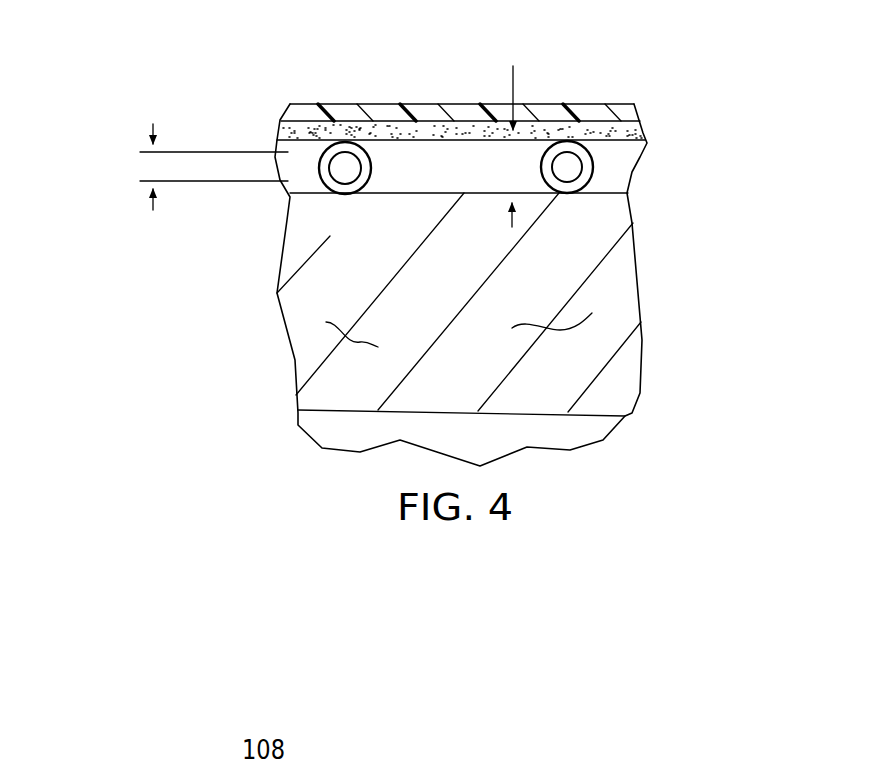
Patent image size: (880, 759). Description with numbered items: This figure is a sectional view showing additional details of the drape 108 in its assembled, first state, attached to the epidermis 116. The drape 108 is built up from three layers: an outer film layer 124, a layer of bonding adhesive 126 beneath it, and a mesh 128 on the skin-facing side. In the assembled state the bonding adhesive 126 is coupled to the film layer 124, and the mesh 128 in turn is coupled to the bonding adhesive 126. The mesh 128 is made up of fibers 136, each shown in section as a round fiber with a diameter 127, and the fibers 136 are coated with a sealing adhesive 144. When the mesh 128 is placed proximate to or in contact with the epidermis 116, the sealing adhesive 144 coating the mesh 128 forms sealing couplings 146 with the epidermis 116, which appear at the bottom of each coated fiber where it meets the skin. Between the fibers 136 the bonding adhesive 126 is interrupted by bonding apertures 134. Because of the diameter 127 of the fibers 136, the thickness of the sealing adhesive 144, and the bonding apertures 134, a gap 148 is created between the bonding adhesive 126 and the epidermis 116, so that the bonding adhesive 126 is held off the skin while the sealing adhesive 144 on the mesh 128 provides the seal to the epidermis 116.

The drape 108 is at (288, 79).
The epidermis 116 is at (487, 382).
The film layer 124 is at (463, 115).
The bonding adhesive 126 is at (645, 133).
The diameter 127 is at (153, 124).
The mesh 128 is at (652, 163).
The bonding apertures 134 is at (402, 155).
The fibers 136 is at (345, 160).
The sealing adhesive 144 is at (567, 141).
The sealing couplings 146 is at (343, 194).
The gap 148 is at (513, 84).